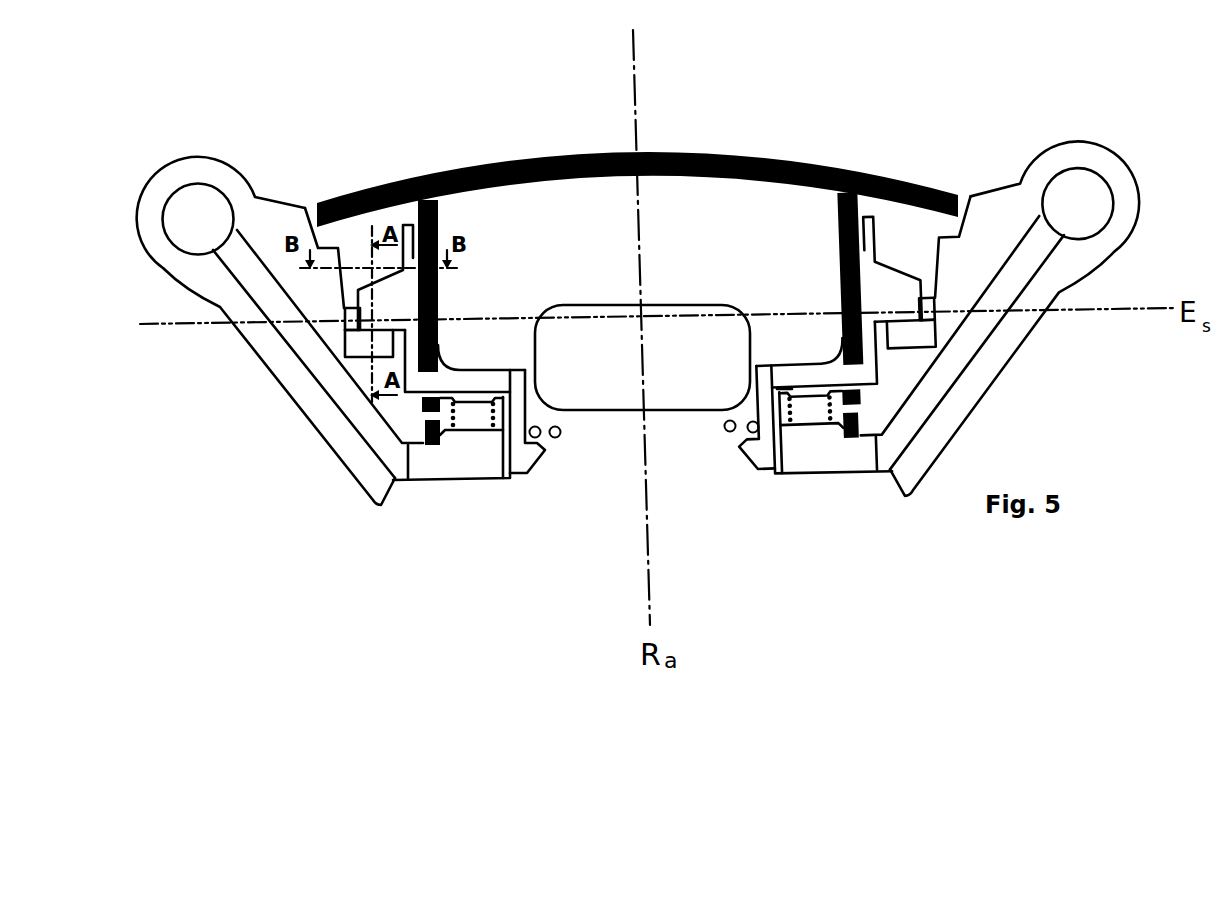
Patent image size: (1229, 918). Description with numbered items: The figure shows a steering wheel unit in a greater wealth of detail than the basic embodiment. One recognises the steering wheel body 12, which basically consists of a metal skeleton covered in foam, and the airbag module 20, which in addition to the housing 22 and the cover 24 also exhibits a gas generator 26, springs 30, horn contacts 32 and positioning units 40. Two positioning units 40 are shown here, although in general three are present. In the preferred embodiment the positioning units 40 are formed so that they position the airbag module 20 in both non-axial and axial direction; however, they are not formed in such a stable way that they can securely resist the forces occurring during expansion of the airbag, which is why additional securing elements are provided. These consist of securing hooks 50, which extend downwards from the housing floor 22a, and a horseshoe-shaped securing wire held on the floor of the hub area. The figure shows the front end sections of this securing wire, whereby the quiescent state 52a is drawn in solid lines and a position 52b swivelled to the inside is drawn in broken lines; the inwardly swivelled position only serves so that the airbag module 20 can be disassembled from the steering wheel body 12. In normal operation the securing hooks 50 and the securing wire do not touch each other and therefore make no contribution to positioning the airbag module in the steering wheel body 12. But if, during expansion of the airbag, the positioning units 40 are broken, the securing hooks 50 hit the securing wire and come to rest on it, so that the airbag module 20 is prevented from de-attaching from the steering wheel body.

The steering wheel body 12 is at (200, 375).
The airbag module 20 is at (792, 202).
The housing 22 is at (488, 377).
The housing floor 22a is at (786, 395).
The cover 24 is at (658, 147).
The gas generator 26 is at (685, 345).
The springs 30 is at (452, 428).
The horn contacts 32 is at (428, 446).
The positioning units 40 is at (371, 308).
The securing hooks 50 is at (526, 470).
The quiescent state of the securing wire 52a is at (533, 426).
The inwardly swivelled position of the securing wire 52b is at (556, 426).